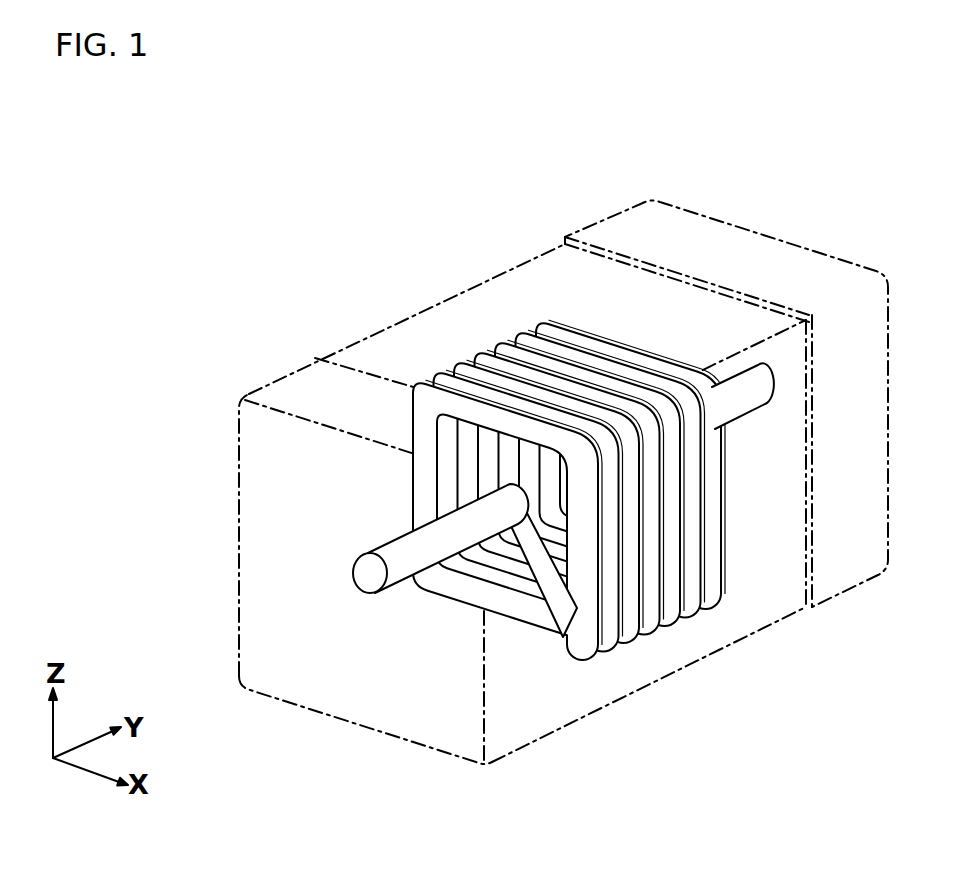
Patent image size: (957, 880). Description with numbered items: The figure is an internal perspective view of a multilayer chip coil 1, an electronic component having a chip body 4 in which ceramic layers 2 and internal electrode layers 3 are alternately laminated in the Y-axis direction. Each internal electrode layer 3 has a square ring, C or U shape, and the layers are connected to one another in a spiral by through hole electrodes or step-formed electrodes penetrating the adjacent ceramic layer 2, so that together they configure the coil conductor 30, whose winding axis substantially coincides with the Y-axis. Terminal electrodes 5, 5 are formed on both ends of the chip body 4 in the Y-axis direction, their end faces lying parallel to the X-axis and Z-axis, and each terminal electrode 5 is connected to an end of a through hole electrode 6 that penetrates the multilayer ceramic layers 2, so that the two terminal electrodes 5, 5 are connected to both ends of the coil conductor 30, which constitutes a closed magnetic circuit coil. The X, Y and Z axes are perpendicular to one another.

The multilayer chip coil 1 is at (428, 297).
The ceramic layer 2 is at (607, 612).
The internal electrode layer 3 is at (603, 543).
The chip body 4 is at (503, 270).
The terminal electrode 5 is at (237, 470).
The through hole electrode 6 is at (750, 392).
The coil conductor 30 is at (674, 543).